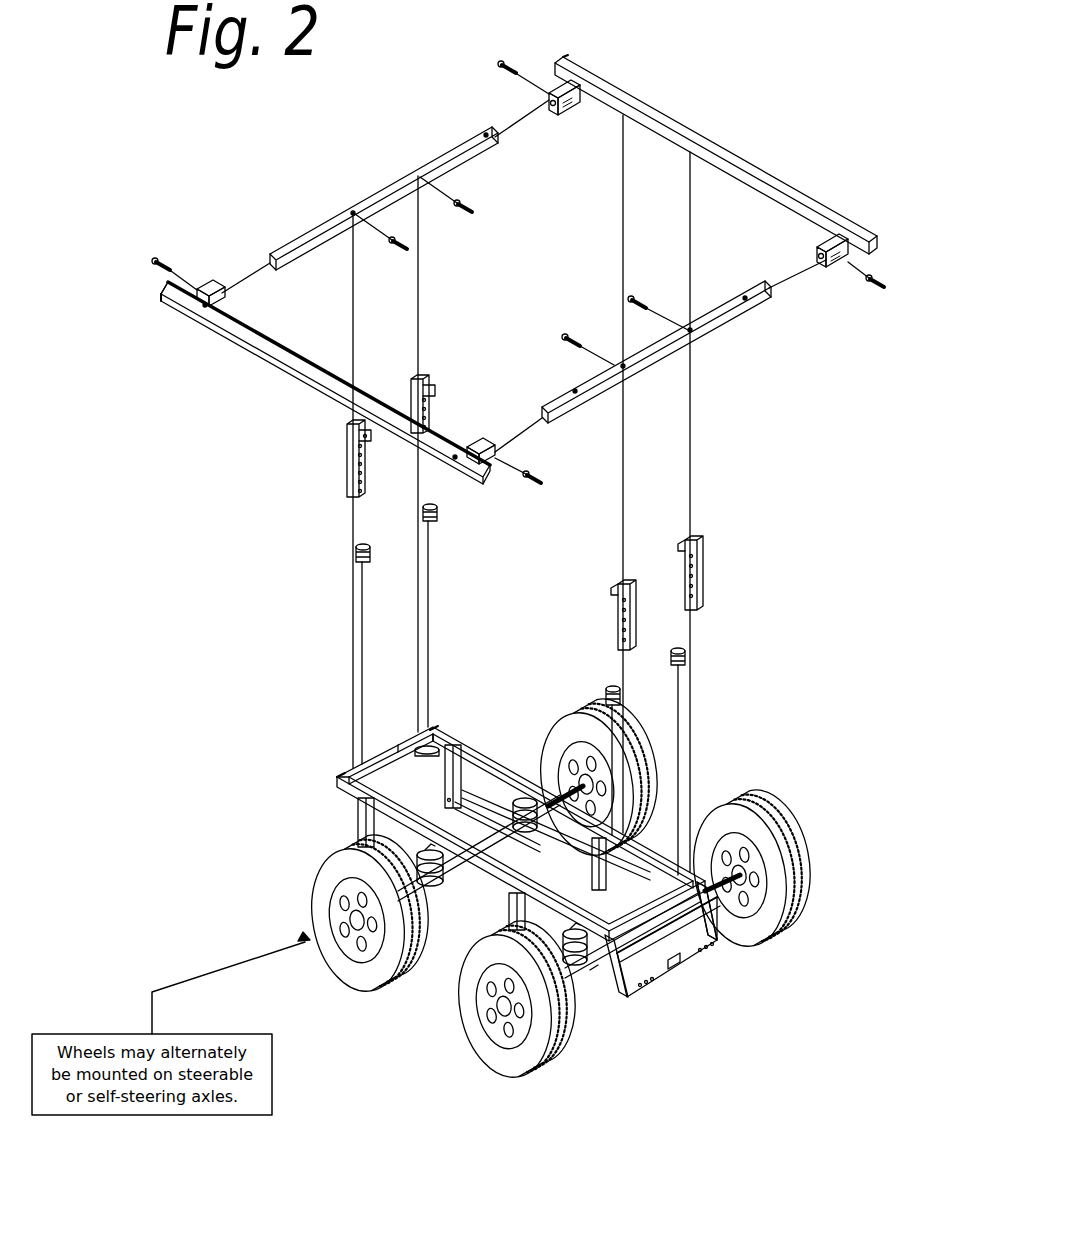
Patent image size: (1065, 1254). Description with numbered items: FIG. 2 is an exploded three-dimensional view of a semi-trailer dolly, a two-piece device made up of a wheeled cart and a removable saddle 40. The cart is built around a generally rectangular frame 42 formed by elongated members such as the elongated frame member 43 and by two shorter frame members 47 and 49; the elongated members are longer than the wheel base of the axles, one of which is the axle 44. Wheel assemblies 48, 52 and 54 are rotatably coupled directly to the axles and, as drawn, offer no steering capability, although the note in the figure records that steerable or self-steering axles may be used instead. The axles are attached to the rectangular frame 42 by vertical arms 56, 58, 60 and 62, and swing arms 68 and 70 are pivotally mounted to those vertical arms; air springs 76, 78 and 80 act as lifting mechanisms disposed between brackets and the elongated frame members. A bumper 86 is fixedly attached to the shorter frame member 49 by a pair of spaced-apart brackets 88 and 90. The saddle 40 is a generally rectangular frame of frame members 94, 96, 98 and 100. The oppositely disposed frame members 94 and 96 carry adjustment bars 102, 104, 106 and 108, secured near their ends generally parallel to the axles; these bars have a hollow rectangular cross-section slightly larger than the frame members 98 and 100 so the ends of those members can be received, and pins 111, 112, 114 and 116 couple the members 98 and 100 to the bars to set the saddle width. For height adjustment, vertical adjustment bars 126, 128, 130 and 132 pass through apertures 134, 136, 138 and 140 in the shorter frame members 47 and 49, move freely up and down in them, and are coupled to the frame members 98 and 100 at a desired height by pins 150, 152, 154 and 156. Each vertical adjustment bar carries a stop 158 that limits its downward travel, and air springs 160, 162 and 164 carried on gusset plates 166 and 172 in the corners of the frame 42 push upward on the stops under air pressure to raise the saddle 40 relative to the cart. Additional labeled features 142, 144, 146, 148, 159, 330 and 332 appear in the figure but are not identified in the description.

The removable saddle 40 is at (770, 104).
The rectangular frame 42 is at (312, 775).
The elongated frame member 43 is at (478, 760).
The axle 44 is at (367, 833).
The shorter frame member 47 is at (398, 752).
The wheel assembly 48 is at (318, 921).
The shorter frame member 49 is at (686, 905).
The wheel assembly 52 is at (490, 1026).
The wheel assembly 54 is at (786, 861).
The vertical arm 56 is at (360, 810).
The vertical arm 58 is at (444, 786).
The vertical arm 60 is at (505, 910).
The vertical arm 62 is at (592, 870).
The swing arm 68 is at (525, 795).
The swing arm 70 is at (650, 880).
The air spring 76 is at (322, 880).
The air spring 78 is at (510, 1072).
The air spring 80 is at (475, 918).
The bumper 86 is at (675, 1000).
The bracket 88 is at (600, 968).
The bracket 90 is at (722, 920).
The saddle frame member 94 is at (360, 395).
The saddle frame member 96 is at (640, 110).
The saddle frame member 98 is at (300, 250).
The saddle frame member 100 is at (740, 338).
The adjustment bar 102 is at (210, 282).
The adjustment bar 104 is at (490, 440).
The adjustment bar 106 is at (578, 118).
The adjustment bar 108 is at (815, 242).
The pin 111 is at (158, 258).
The pin 112 is at (508, 60).
The pin 114 is at (543, 482).
The pin 116 is at (880, 290).
The vertical adjustment bar 126 is at (346, 485).
The vertical adjustment bar 128 is at (432, 405).
The vertical adjustment bar 130 is at (702, 575).
The vertical adjustment bar 132 is at (636, 582).
The aperture 134 is at (350, 768).
The aperture 136 is at (433, 727).
The aperture 138 is at (598, 965).
The aperture 140 is at (700, 840).
The rail hole 142 is at (350, 216).
The rail hole 144 is at (492, 140).
The rail hole 146 is at (628, 373).
The rail hole 148 is at (698, 340).
The pin 150 is at (410, 250).
The pin 152 is at (474, 213).
The pin 154 is at (566, 330).
The pin 156 is at (636, 296).
The stop 158 is at (358, 435).
The resilient bushing 159 is at (357, 561).
The air spring 160 is at (440, 512).
The air spring 162 is at (612, 688).
The air spring 164 is at (688, 657).
The gusset plate 166 is at (345, 782).
The gusset plate 172 is at (660, 885).
The rail end 330 is at (568, 57).
The rail end 332 is at (160, 292).